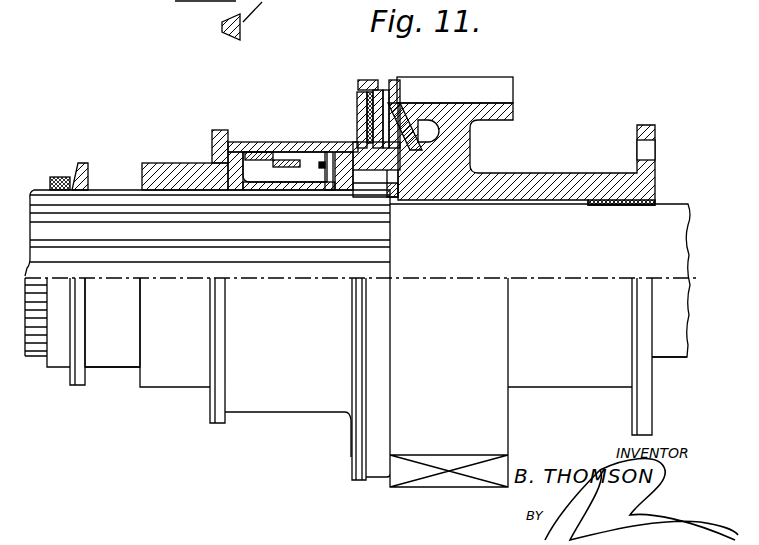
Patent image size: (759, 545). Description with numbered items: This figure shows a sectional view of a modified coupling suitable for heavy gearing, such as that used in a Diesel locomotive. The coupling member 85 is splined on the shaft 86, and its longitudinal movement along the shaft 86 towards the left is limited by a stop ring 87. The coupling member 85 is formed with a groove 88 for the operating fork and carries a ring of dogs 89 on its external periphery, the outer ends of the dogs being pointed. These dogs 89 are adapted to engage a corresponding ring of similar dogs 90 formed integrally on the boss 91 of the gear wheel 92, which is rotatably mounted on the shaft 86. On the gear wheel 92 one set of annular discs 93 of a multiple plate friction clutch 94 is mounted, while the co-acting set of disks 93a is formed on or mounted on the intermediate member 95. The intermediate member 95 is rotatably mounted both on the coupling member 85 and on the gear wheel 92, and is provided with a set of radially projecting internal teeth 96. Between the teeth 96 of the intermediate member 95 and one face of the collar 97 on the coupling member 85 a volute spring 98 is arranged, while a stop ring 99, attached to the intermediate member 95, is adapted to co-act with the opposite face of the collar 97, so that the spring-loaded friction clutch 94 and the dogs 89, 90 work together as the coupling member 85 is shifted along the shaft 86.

The coupling member 85 is at (160, 168).
The shaft 86 is at (182, 233).
The stop ring 87 is at (53, 177).
The groove 88 is at (125, 340).
The dogs 89 is at (284, 180).
The dogs 90 is at (375, 176).
The boss 91 is at (392, 142).
The gear wheel 92 is at (512, 104).
The annular discs 93 is at (383, 78).
The disks 93a is at (357, 103).
The multiple plate friction clutch 94 is at (399, 107).
The intermediate member 95 is at (281, 143).
The internal teeth 96 is at (327, 165).
The collar 97 is at (223, 150).
The volute spring 98 is at (255, 150).
The stop ring 99 is at (212, 147).